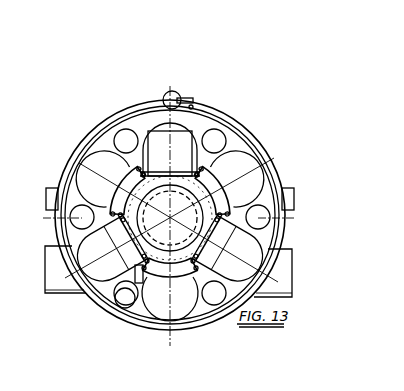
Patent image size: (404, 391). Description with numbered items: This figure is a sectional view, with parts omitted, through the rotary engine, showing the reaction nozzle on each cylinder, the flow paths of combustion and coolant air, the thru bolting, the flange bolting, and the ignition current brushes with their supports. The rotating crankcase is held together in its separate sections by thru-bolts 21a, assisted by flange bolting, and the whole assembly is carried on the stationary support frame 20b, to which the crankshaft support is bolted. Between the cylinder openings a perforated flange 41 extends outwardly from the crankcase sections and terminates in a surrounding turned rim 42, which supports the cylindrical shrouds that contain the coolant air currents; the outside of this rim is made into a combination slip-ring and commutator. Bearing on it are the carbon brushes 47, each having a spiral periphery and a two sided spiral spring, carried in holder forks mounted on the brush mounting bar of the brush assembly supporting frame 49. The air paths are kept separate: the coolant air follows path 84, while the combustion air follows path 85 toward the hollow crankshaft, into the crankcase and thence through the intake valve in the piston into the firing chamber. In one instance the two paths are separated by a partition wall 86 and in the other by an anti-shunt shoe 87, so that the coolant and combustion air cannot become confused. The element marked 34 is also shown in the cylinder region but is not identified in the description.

The support frame 20b is at (60, 247).
The thru-bolts 21a is at (170, 218).
The piston 34 is at (170, 153).
The perforated flange 41 is at (170, 217).
The turned rim 42 is at (114, 311).
The carbon brush 47 is at (174, 93).
The brush assembly supporting frame 49 is at (259, 131).
The coolant air path 84 is at (18, 313).
The combustion air path 85 is at (170, 225).
The partition wall 86 is at (143, 293).
The anti-shunt shoe 87 is at (206, 131).